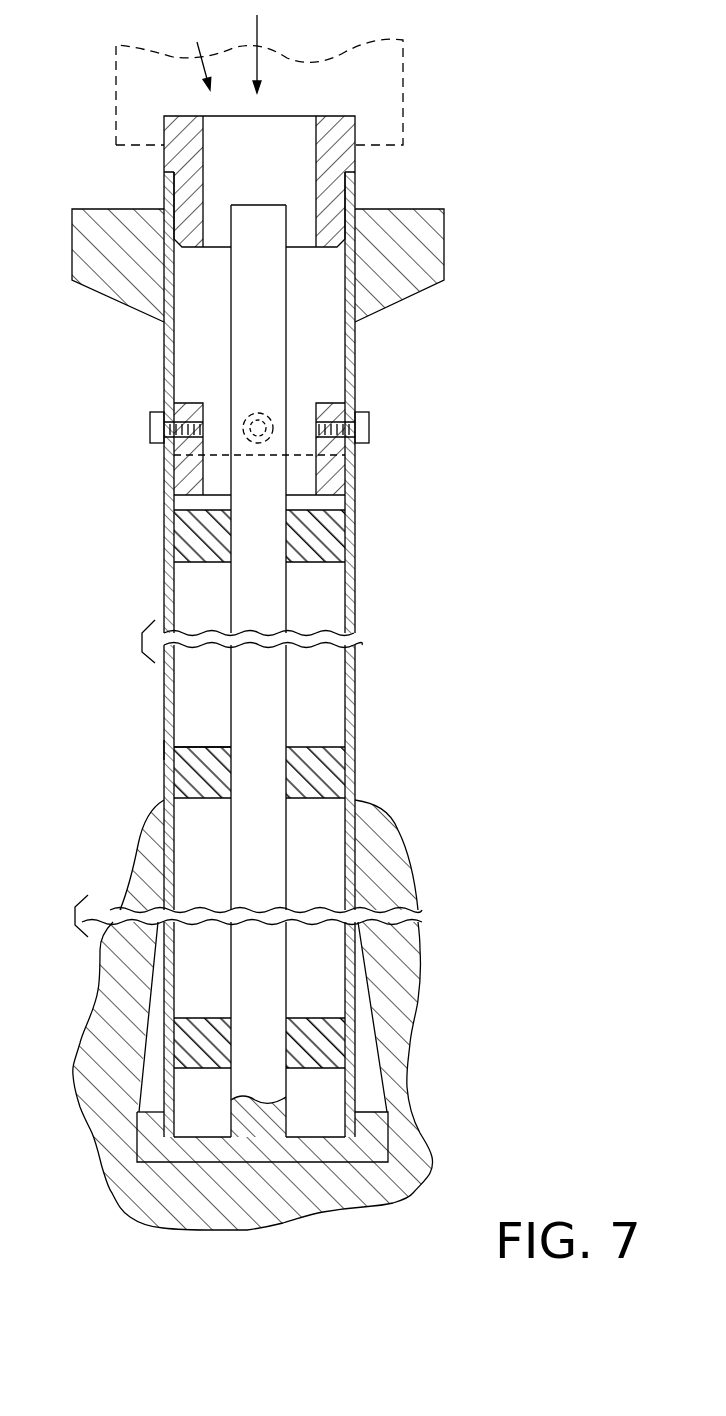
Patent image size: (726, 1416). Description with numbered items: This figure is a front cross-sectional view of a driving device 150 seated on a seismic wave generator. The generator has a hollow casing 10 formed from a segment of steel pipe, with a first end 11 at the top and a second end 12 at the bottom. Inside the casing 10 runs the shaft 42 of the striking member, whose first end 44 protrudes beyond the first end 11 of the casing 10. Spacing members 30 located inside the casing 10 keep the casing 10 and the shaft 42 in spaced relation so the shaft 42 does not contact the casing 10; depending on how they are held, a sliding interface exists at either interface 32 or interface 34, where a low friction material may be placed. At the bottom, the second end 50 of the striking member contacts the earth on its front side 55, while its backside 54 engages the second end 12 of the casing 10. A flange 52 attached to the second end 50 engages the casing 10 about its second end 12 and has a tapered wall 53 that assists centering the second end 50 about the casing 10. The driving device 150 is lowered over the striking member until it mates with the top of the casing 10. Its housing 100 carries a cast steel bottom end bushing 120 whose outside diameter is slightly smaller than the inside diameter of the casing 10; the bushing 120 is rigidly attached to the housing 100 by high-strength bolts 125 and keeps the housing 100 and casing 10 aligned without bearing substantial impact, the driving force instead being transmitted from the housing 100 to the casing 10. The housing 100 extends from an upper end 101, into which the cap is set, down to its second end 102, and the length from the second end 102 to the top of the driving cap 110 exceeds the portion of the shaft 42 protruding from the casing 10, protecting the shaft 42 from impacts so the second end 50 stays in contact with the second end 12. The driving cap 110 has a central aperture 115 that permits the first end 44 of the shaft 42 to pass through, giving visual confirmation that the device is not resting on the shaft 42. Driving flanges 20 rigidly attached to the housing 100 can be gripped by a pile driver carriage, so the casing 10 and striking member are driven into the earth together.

The hollow casing 10 is at (355, 615).
The first end of casing 11 is at (164, 453).
The second end of casing 12 is at (377, 1147).
The driving flanges 20 is at (427, 242).
The spacing members 30 is at (325, 557).
The interface 32 is at (180, 747).
The interface 34 is at (232, 747).
The shaft 42 is at (248, 356).
The first end of striking member 44 is at (257, 205).
The second end of striking member 50 is at (138, 1092).
The flange 52 is at (357, 1133).
The tapered wall 53 is at (187, 1117).
The backside of second end 54 is at (313, 1130).
The front side 55 is at (410, 1195).
The housing 100 is at (355, 353).
The tube top end 101 is at (355, 172).
The second end of housing 102 is at (355, 455).
The driving cap 110 is at (149, 121).
The aperture 115 is at (285, 128).
The bottom end bushing 120 is at (174, 490).
The high-strength bolts 125 is at (369, 425).
The driving device 150 is at (194, 48).